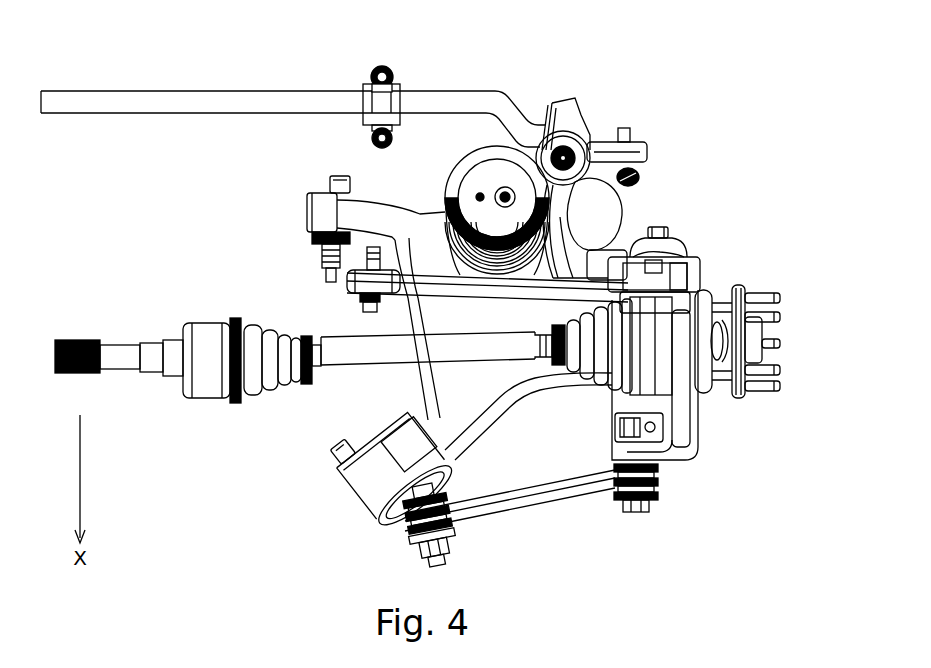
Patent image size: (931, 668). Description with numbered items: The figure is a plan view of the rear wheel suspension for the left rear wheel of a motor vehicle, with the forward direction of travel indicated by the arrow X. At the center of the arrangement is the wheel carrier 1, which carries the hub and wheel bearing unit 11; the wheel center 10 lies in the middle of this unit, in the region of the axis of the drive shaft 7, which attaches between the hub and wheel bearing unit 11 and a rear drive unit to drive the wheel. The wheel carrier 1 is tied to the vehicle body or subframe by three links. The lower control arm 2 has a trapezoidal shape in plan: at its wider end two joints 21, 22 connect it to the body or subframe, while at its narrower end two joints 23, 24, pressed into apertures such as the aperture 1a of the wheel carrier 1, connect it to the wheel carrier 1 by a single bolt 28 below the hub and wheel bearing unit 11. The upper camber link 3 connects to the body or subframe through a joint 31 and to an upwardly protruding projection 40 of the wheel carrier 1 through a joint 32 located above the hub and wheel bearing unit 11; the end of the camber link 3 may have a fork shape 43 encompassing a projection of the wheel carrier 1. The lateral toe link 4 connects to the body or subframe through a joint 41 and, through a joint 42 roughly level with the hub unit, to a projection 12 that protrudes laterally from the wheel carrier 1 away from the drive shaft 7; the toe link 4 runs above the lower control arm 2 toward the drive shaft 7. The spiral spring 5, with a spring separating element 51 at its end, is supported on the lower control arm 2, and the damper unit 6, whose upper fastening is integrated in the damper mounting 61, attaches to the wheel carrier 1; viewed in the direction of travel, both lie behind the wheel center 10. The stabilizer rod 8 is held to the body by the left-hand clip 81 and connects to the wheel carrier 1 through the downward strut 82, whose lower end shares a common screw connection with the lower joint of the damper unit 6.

The wheel carrier 1 is at (733, 233).
The aperture 1a is at (733, 232).
The lower control arm 2 is at (523, 415).
The upper camber link 3 is at (342, 293).
The lateral toe link 4 is at (553, 520).
The spiral spring 5 is at (494, 195).
The damper unit 6 is at (643, 131).
The drive shaft 7 is at (360, 357).
The stabilizer rod 8 is at (210, 100).
The wheel center 10 is at (748, 358).
The hub and wheel bearing unit 11 is at (749, 358).
The projection 12 is at (671, 423).
The joint 21 is at (362, 487).
The joint 22 is at (320, 210).
The joint 23 is at (668, 423).
The joint 24 is at (672, 250).
The bolt 28 is at (698, 232).
The joint 31 is at (358, 303).
The joint 32 is at (690, 270).
The projection 40 is at (449, 300).
The joint 41 is at (408, 540).
The joint 42 is at (655, 490).
The fork shape 43 is at (628, 265).
The spring separating element 51 is at (492, 186).
The damper mounting 61 is at (556, 131).
The clip 81 is at (377, 92).
The downward strut 82 is at (640, 167).